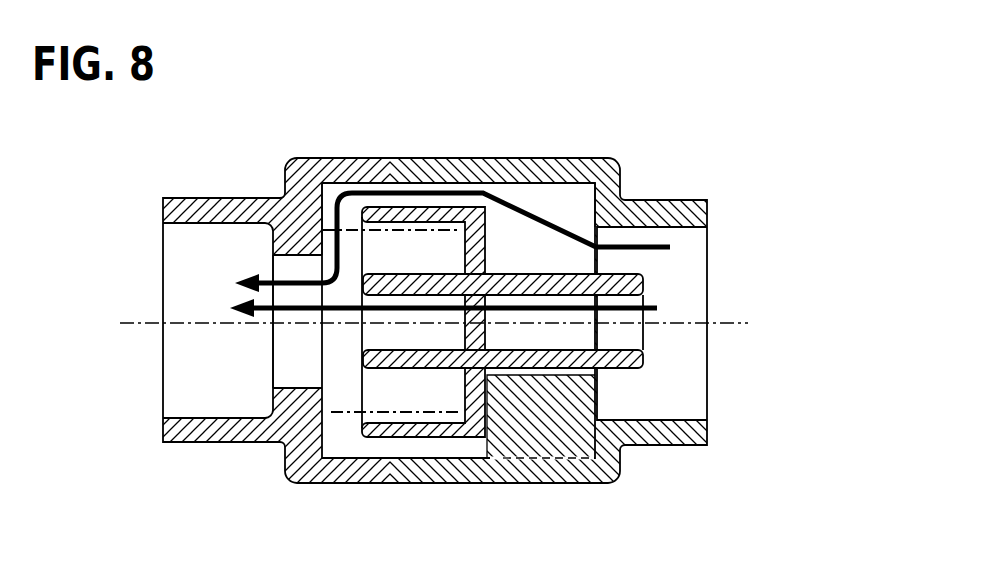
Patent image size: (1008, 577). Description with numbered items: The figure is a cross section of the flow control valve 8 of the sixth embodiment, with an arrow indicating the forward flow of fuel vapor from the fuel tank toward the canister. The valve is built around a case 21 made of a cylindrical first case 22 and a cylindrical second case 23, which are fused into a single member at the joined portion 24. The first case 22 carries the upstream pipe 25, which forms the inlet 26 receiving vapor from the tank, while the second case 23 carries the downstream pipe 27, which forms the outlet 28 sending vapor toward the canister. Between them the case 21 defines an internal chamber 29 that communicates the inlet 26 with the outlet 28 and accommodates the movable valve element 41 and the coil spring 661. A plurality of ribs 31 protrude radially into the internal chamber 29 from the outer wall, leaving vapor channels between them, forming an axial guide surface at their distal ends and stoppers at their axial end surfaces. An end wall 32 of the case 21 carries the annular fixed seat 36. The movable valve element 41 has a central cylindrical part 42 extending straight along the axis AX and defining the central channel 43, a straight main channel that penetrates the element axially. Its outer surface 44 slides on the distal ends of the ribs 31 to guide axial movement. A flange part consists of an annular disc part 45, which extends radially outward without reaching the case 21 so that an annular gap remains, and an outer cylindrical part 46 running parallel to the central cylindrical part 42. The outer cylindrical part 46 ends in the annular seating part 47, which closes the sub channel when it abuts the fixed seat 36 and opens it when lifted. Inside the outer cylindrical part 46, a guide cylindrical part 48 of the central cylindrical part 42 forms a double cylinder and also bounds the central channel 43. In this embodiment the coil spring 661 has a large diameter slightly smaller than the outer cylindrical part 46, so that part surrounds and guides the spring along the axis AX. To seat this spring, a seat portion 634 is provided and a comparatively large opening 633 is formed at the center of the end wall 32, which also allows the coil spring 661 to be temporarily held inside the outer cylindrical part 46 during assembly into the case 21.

The flow control valve 8 is at (726, 146).
The case 21 is at (632, 200).
The first case 22 is at (437, 484).
The second case 23 is at (365, 484).
The joined portion 24 is at (390, 437).
The upstream pipe 25 is at (672, 447).
The inlet 26 is at (653, 392).
The downstream pipe 27 is at (214, 444).
The outlet 28 is at (210, 393).
The internal chamber 29 is at (465, 447).
The ribs 31 is at (540, 410).
The end wall 32 is at (270, 362).
The fixed seat 36 is at (280, 198).
The movable valve element 41 is at (604, 200).
The central cylindrical part 42 is at (568, 268).
The central channel 43 is at (635, 300).
The outer surface 44 is at (535, 268).
The disc part 45 is at (508, 268).
The outer cylindrical part 46 is at (437, 207).
The seating part 47 is at (320, 205).
The guide cylindrical part 48 is at (390, 207).
The opening 633 is at (293, 322).
The seat portion 634 is at (270, 252).
The coil spring 661 is at (331, 412).
The axis AX is at (727, 323).